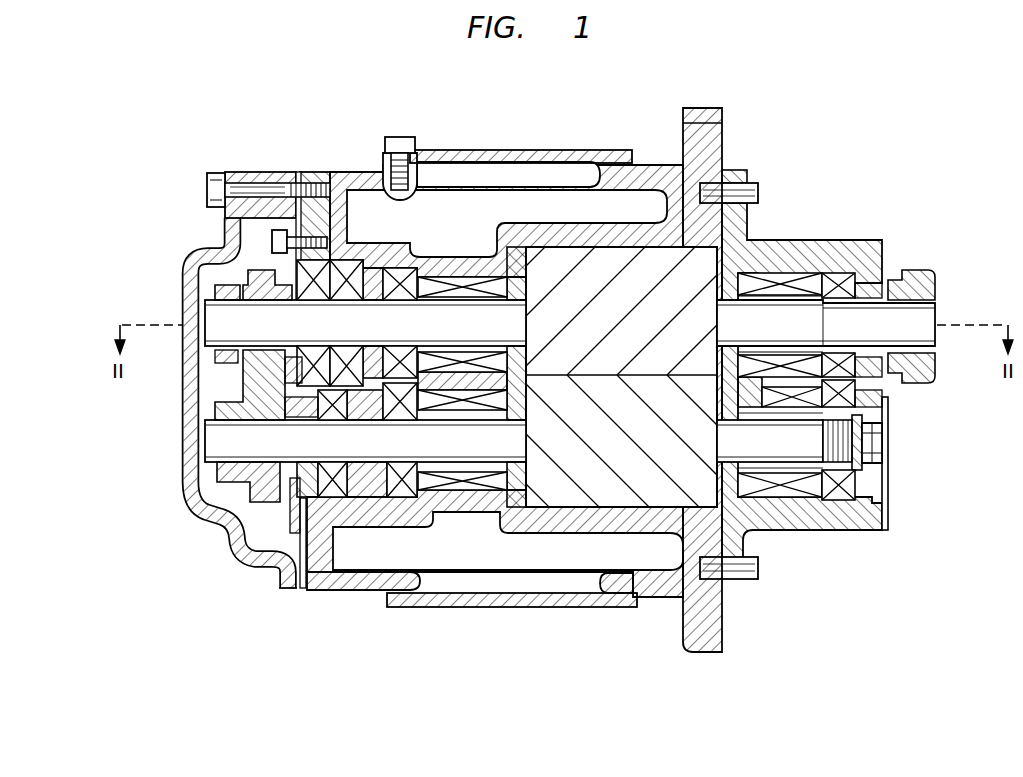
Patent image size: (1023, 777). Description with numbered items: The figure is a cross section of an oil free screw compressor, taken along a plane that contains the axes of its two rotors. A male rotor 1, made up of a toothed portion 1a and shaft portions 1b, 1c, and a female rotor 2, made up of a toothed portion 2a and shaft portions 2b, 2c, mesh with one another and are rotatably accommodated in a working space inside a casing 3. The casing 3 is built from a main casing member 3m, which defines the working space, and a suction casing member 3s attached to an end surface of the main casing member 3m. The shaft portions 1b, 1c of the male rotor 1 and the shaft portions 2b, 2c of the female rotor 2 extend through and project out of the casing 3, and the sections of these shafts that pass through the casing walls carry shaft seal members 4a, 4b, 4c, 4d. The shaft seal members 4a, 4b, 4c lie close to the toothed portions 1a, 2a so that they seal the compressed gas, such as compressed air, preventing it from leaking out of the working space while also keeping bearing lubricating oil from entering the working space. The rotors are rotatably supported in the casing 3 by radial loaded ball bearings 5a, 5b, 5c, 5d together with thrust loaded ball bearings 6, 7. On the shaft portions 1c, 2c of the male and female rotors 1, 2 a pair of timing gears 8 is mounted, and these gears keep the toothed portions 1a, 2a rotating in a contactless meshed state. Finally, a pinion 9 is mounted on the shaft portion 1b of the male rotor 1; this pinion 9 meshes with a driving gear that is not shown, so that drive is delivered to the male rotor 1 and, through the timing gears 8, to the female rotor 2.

The male rotor 1 is at (554, 299).
The toothed portion 1a is at (559, 257).
The shaft portion 1b is at (913, 320).
The shaft portion 1c is at (212, 316).
The female rotor 2 is at (521, 512).
The toothed portion 2a is at (611, 500).
The shaft portion 2b is at (818, 438).
The shaft portion 2c is at (215, 440).
The casing 3 is at (540, 410).
The main casing member 3m is at (705, 648).
The suction casing member 3s is at (775, 553).
The shaft seal member 4a is at (787, 275).
The shaft seal member 4b is at (813, 492).
The shaft seal member 4c is at (462, 280).
The shaft seal member 4d is at (462, 485).
The radial loaded ball bearing 5a is at (840, 277).
The radial loaded ball bearing 5b is at (843, 497).
The radial loaded ball bearing 5c is at (403, 272).
The radial loaded ball bearing 5d is at (403, 493).
The thrust loaded ball bearing 6 is at (347, 262).
The thrust loaded ball bearing 7 is at (358, 490).
The timing gears 8 is at (250, 393).
The pinion 9 is at (935, 364).